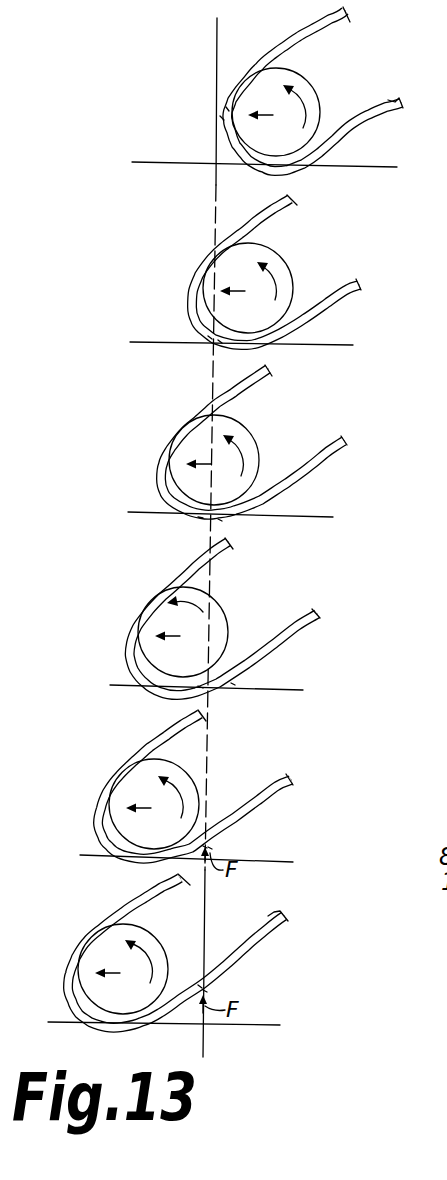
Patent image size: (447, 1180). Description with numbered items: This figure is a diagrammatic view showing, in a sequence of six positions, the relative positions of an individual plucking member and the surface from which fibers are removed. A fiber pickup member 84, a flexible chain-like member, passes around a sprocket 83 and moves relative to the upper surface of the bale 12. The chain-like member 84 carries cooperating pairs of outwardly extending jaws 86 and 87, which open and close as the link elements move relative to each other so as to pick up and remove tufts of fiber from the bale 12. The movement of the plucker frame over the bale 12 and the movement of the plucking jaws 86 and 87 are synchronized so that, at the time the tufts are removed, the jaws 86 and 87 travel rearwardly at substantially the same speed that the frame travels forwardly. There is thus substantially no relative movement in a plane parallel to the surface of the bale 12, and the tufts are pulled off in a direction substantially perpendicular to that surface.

The bale 12 is at (366, 166).
The sprocket 83 is at (313, 100).
The fiber pickup member 84 is at (388, 99).
The jaw 86 is at (227, 109).
The jaw 87 is at (222, 118).